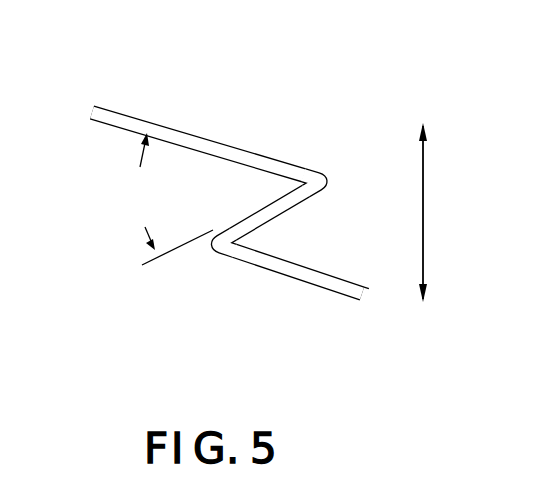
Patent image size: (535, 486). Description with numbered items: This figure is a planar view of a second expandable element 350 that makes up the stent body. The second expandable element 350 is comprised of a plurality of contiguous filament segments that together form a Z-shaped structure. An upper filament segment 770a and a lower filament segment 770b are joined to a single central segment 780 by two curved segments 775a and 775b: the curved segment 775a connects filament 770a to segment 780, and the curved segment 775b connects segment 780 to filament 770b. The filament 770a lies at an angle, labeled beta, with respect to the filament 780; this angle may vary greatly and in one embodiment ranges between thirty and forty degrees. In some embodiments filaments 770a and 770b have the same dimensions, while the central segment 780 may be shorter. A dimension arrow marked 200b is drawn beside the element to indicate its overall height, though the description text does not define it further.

The second expandable element 350 is at (205, 186).
The filament segment 770a is at (211, 147).
The curved segment 775a is at (313, 172).
The single filament segment 780 is at (279, 216).
The curved segment 775b is at (219, 255).
The filament segment 770b is at (273, 273).
The height dimension 200b is at (462, 212).